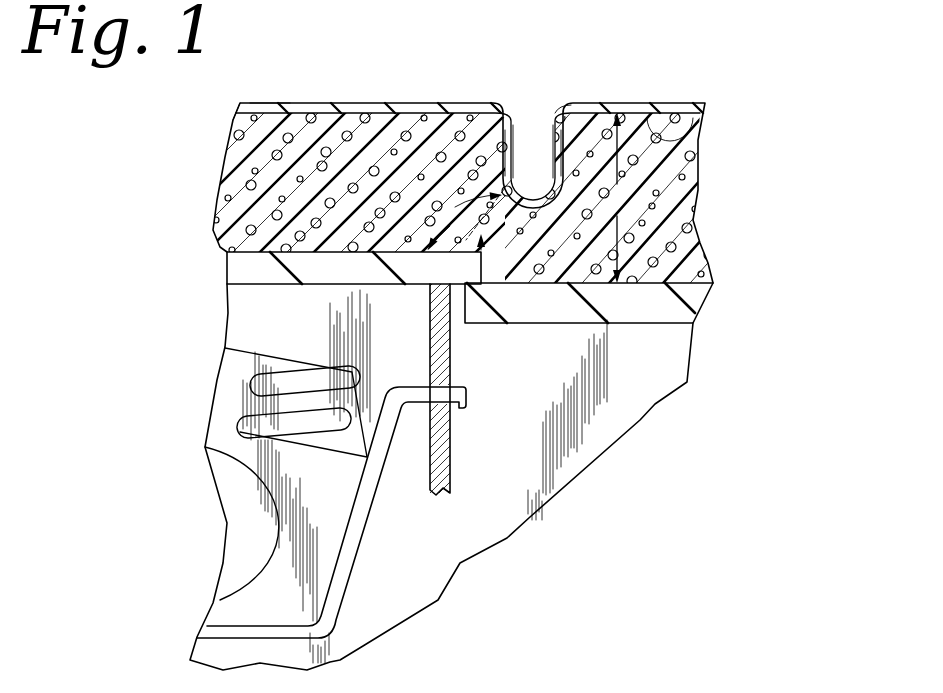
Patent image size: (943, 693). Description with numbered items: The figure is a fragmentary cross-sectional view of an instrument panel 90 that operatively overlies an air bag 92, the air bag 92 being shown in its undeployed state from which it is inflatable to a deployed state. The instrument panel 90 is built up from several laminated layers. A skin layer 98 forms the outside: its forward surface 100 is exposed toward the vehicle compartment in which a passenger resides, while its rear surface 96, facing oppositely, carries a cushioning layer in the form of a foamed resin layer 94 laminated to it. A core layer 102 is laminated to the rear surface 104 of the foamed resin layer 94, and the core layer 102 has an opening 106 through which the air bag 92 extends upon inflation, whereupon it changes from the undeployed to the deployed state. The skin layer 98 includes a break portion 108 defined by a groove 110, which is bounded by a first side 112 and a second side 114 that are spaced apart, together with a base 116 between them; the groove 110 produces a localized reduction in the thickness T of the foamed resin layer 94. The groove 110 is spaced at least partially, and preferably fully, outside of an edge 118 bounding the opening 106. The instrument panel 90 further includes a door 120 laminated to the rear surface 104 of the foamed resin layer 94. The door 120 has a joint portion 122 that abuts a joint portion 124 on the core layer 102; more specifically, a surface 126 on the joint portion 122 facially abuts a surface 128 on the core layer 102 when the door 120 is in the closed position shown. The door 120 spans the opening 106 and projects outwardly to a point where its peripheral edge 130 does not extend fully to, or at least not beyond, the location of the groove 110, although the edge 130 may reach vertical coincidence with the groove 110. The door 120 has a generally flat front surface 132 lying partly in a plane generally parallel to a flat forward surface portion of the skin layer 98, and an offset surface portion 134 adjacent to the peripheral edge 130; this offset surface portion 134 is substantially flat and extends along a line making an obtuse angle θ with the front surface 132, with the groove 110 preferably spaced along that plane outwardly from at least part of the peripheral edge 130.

The instrument panel 90 is at (765, 217).
The air bag 92 is at (232, 392).
The foamed resin layer 94 is at (678, 168).
The rear surface 96 is at (693, 143).
The skin layer 98 is at (266, 103).
The forward surface 100 is at (613, 108).
The core layer 102 is at (618, 290).
The rear surface 104 is at (686, 292).
The opening 106 is at (400, 405).
The break portion 108 is at (552, 80).
The groove 110 is at (523, 130).
The first side 112 is at (537, 133).
The second side 114 is at (553, 110).
The base 116 is at (575, 262).
The edge 118 is at (462, 306).
The door 120 is at (318, 272).
The joint portion 122 is at (445, 150).
The joint portion 124 is at (470, 200).
The surface 126 is at (315, 122).
The surface 128 is at (458, 190).
The peripheral edge 130 is at (540, 250).
The front surface 132 is at (240, 103).
The offset surface portion 134 is at (476, 165).